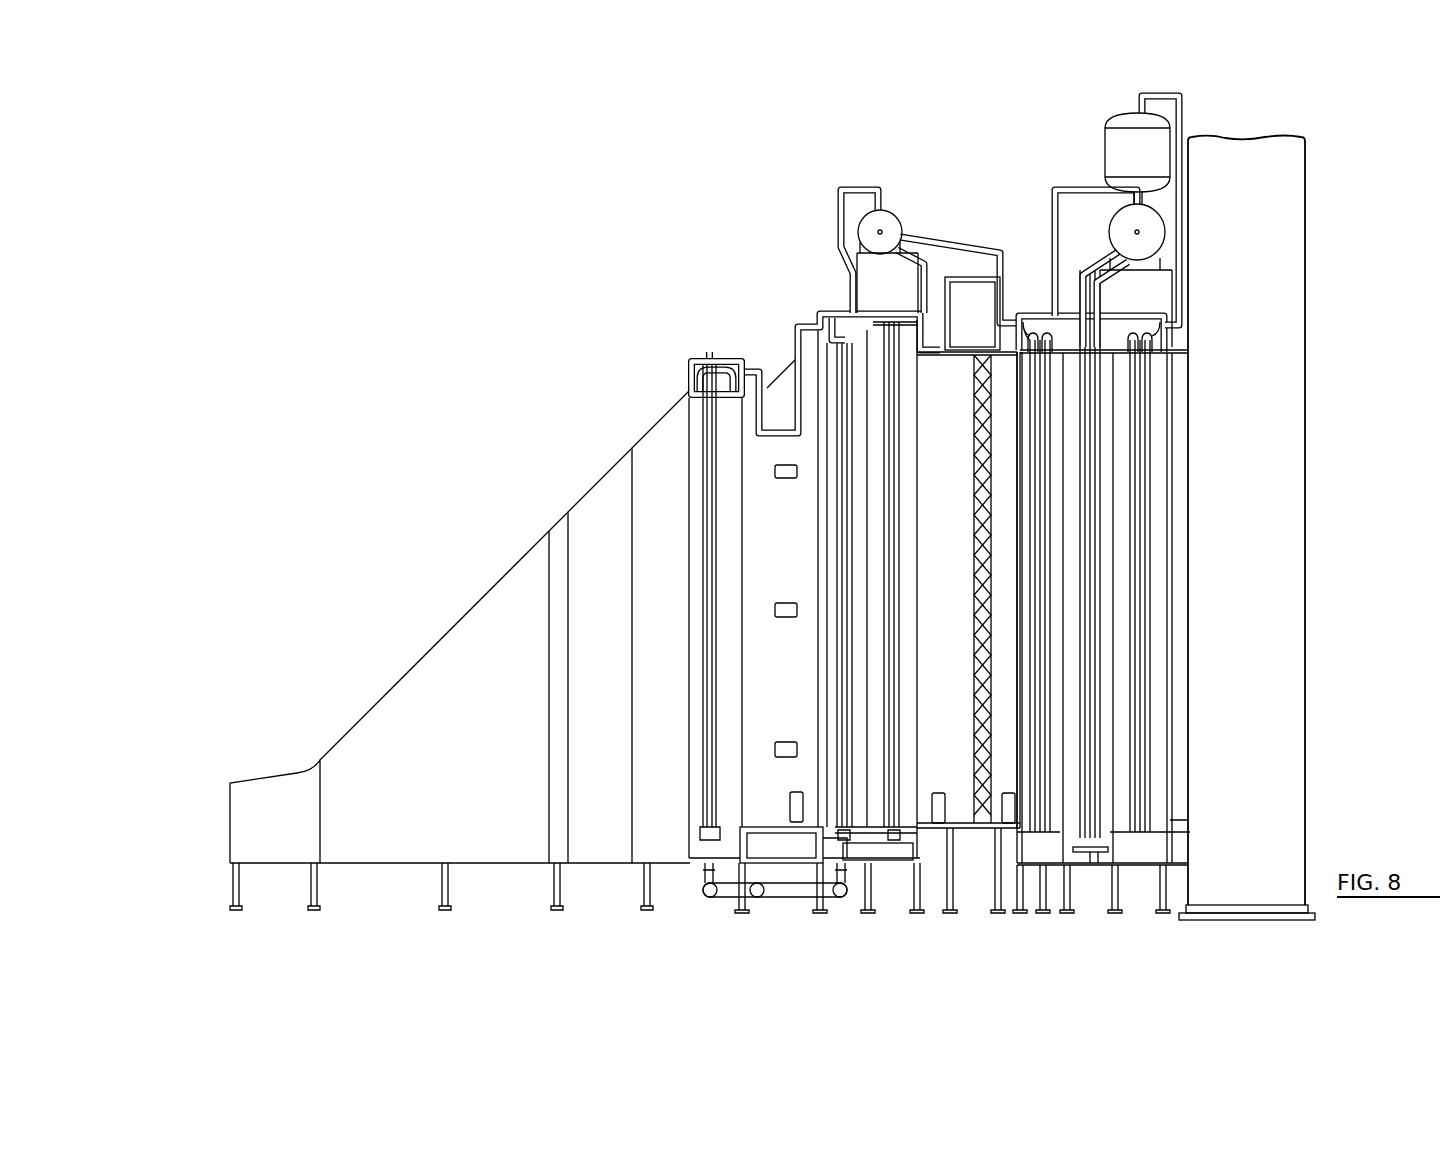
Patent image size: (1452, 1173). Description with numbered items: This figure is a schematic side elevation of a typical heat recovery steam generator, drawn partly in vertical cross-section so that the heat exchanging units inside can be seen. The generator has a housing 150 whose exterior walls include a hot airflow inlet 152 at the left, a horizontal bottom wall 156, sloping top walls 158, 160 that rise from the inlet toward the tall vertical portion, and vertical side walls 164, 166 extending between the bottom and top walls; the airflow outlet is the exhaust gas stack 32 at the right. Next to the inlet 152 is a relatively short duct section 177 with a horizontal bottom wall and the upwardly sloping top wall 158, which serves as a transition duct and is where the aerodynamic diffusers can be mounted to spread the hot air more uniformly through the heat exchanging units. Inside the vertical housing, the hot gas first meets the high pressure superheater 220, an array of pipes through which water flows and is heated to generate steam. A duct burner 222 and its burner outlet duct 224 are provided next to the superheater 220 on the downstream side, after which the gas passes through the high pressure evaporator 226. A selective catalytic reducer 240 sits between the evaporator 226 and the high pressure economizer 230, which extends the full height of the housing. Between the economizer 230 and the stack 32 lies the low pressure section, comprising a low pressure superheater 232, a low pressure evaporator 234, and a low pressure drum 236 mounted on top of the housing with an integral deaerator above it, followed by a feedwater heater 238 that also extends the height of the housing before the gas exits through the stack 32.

The exhaust gas stack 32 is at (1292, 573).
The housing 150 is at (651, 424).
The hot airflow inlet 152 is at (229, 797).
The horizontal bottom wall 156 is at (1036, 866).
The sloping top wall 158 is at (284, 772).
The sloping top wall 160 is at (500, 580).
The vertical side wall 164 is at (430, 663).
The vertical side wall 166 is at (961, 400).
The duct section 177 is at (290, 870).
The high pressure superheater 220 is at (710, 705).
The duct burner 222 is at (770, 813).
The burner outlet duct 224 is at (796, 714).
The high pressure evaporator 226 is at (910, 845).
The high pressure economizer 230 is at (1040, 750).
The low pressure superheater 232 is at (1060, 845).
The low pressure evaporator 234 is at (1105, 863).
The low pressure drum 236 is at (1157, 230).
The feedwater heater 238 is at (890, 218).
The selective catalytic reducer 240 is at (974, 568).